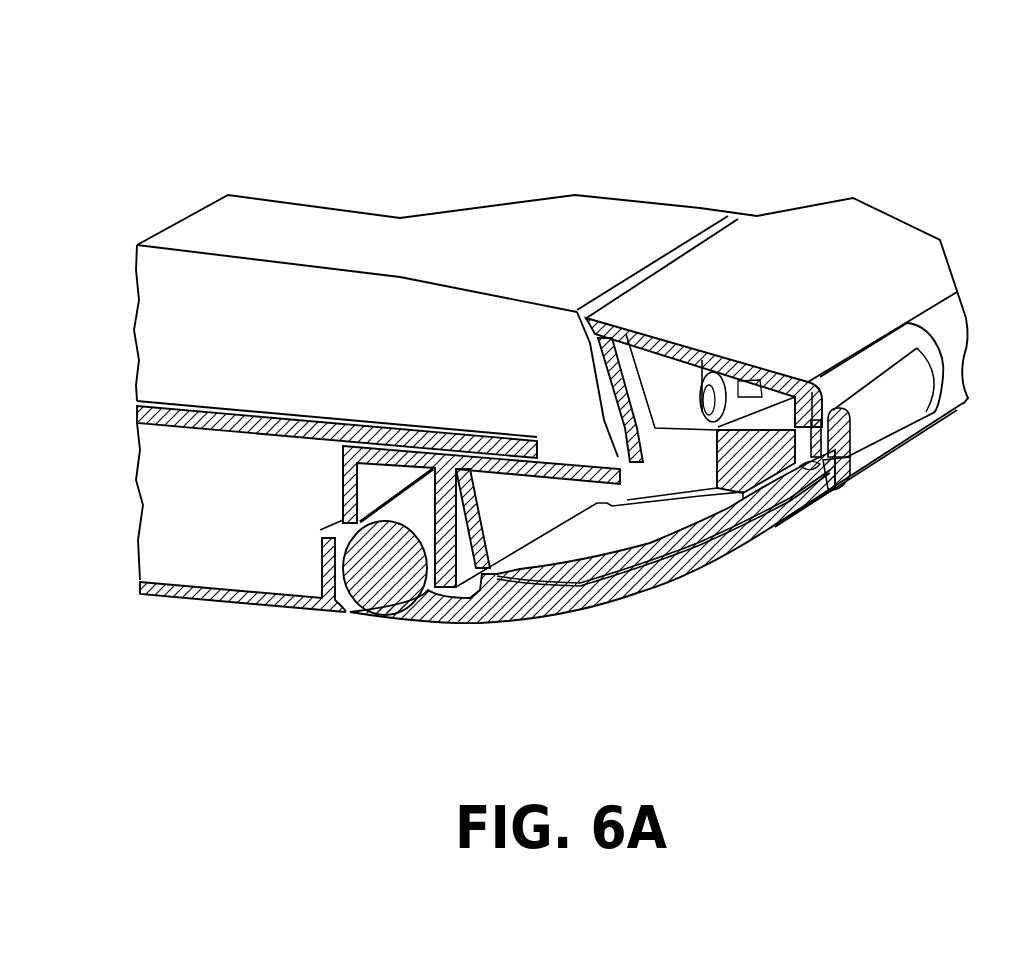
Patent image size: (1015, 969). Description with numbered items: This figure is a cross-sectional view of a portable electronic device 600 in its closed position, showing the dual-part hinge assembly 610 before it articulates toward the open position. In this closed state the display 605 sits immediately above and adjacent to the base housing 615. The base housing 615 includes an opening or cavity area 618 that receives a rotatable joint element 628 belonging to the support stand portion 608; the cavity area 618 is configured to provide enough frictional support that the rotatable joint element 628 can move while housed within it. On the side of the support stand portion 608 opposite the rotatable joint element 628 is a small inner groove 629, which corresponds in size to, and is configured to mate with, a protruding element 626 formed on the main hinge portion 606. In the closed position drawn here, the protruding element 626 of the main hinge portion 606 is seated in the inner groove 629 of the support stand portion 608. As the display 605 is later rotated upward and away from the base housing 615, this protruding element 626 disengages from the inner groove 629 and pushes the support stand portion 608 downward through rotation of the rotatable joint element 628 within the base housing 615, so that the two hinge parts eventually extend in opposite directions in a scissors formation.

The hinge assembly 600 is at (438, 70).
The display 605 is at (200, 217).
The main hinge portion 606 is at (628, 300).
The support stand portion 608 is at (605, 605).
The hinge assembly 610 is at (948, 434).
The base housing 615 is at (155, 545).
The cavity area 618 is at (378, 490).
The protruding element 626 is at (812, 385).
The rotatable joint element 628 is at (378, 612).
The inner groove 629 is at (826, 486).